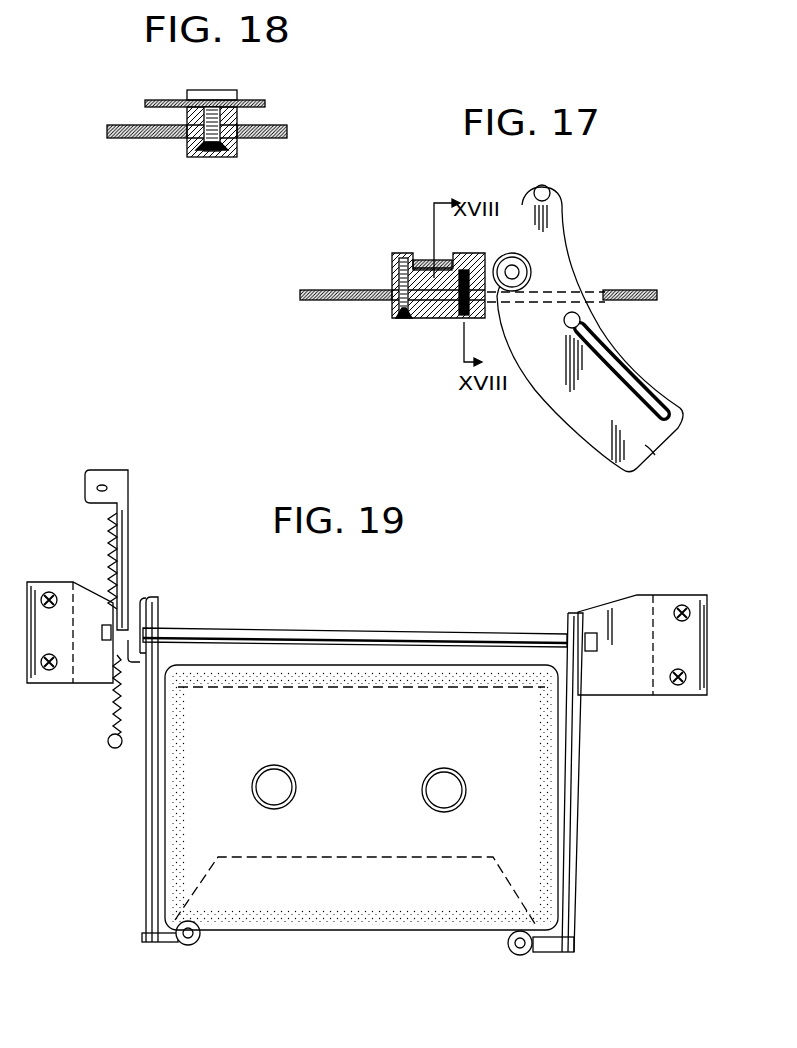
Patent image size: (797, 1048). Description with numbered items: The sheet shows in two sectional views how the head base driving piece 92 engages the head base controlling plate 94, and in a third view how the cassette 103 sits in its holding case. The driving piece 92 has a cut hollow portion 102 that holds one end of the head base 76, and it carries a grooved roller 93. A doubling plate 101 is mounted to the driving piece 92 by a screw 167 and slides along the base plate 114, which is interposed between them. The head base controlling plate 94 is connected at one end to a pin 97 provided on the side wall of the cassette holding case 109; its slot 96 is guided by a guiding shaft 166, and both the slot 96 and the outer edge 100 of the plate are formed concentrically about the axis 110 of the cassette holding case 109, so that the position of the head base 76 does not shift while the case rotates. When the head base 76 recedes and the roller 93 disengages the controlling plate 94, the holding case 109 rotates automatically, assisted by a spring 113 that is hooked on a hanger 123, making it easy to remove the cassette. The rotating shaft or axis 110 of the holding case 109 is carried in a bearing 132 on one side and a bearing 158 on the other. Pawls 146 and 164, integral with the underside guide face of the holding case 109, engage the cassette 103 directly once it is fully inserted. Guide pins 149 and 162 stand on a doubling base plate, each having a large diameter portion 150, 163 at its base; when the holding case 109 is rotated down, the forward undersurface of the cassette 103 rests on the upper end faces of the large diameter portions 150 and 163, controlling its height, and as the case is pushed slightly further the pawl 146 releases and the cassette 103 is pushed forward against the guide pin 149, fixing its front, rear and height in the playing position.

In FIG. 18, the head base 76 is at (246, 102).
In FIG. 17, the head base 76 is at (424, 262).
In FIG. 18, the head base driving piece 92 is at (240, 116).
In FIG. 17, the head base driving piece 92 is at (393, 262).
In FIG. 17, the grooved roller 93 is at (509, 291).
In FIG. 17, the head base controlling plate 94 is at (655, 455).
In FIG. 17, the slot 96 is at (610, 372).
In FIG. 17, the pin 97 is at (551, 192).
In FIG. 17, the outer edge 100 is at (545, 392).
In FIG. 18, the doubling plate 101 is at (192, 154).
In FIG. 17, the doubling plate 101 is at (422, 319).
In FIG. 18, the cut hollow portion 102 is at (197, 101).
In FIG. 19, the cassette 103 is at (347, 929).
In FIG. 19, the cassette holding case 109 is at (147, 848).
In FIG. 19, the axis 110 is at (340, 609).
In FIG. 19, the spring 113 is at (111, 697).
In FIG. 18, the base plate 114 is at (246, 139).
In FIG. 17, the base plate 114 is at (341, 290).
In FIG. 19, the hanger 123 is at (109, 745).
In FIG. 19, the bearing 132 is at (87, 600).
In FIG. 19, the pawl 146 is at (143, 936).
In FIG. 19, the guide pin 149 is at (200, 937).
In FIG. 19, the large diameter portion 150 is at (198, 923).
In FIG. 19, the bearing 158 is at (632, 690).
In FIG. 19, the guide pin 162 is at (520, 931).
In FIG. 19, the large diameter portion 163 is at (508, 945).
In FIG. 19, the pawl 164 is at (560, 936).
In FIG. 17, the guiding shaft 166 is at (582, 320).
In FIG. 18, the screw 167 is at (214, 157).
In FIG. 17, the screw 167 is at (397, 318).